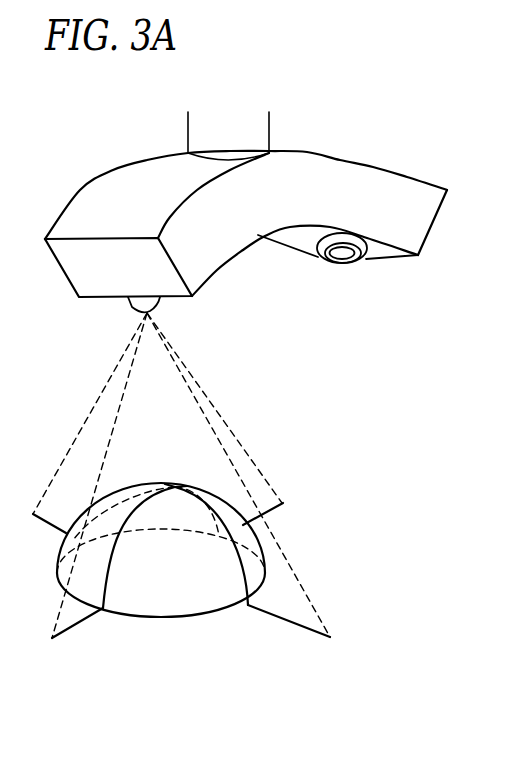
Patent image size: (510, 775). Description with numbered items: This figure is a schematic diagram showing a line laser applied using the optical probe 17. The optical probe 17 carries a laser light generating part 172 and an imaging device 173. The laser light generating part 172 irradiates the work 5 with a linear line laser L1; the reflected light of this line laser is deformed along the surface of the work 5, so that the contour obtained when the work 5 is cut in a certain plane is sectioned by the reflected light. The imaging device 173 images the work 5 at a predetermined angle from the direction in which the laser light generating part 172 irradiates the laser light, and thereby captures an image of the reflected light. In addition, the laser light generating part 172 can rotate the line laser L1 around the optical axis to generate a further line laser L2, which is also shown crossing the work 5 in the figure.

The optical probe 17 is at (418, 152).
The laser light generating part 172 is at (130, 302).
The imaging device 173 is at (367, 261).
The work 5 is at (63, 546).
The line laser L1 is at (290, 623).
The line laser L2 is at (283, 503).